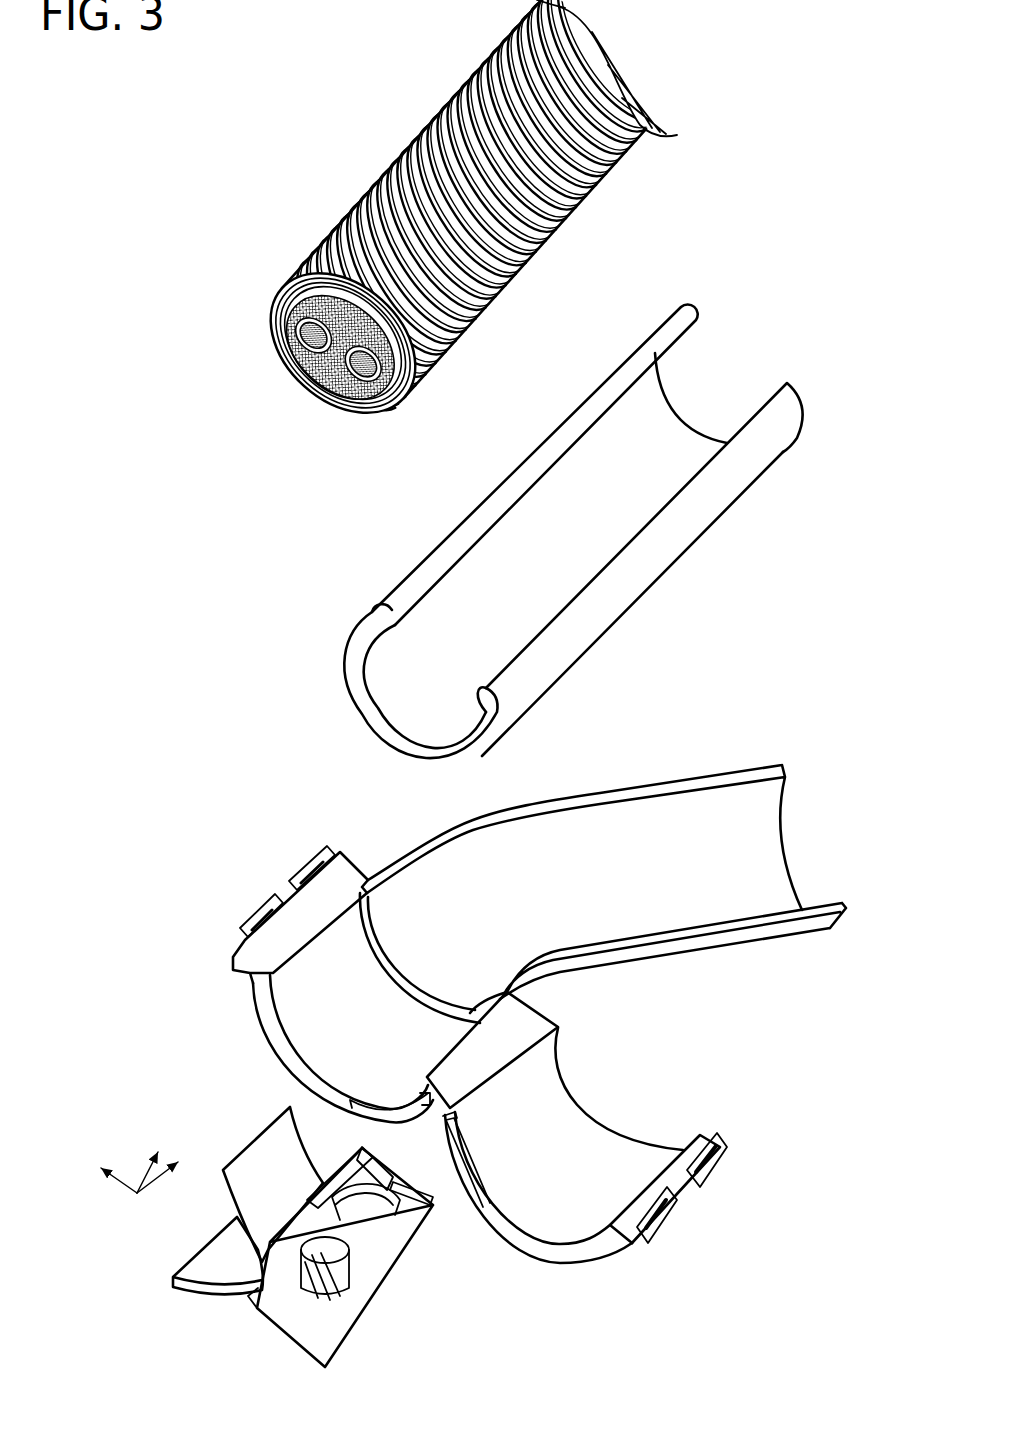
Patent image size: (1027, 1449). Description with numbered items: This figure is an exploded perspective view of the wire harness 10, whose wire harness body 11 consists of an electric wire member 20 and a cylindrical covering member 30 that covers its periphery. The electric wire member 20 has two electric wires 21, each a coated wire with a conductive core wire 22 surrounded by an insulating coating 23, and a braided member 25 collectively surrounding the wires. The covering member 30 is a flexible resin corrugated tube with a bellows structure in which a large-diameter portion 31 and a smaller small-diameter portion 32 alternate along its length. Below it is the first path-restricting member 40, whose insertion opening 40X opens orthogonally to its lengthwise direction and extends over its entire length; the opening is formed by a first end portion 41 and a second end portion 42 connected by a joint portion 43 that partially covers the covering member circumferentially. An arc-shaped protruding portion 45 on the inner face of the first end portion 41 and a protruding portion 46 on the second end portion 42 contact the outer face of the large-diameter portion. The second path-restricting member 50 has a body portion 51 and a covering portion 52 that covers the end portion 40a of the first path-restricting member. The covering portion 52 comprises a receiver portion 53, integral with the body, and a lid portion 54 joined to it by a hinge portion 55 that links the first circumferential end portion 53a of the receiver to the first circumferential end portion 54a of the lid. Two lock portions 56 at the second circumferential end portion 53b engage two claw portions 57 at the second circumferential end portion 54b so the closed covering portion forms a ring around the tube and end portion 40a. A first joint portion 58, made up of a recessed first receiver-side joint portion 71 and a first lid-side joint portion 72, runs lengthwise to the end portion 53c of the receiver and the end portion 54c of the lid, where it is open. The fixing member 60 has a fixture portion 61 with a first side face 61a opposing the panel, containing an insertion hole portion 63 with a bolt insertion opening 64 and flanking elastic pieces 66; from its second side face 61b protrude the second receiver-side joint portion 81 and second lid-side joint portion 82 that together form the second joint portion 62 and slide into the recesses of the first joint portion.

The wire harness 10 is at (142, 108).
The wire harness body 11 is at (390, 174).
The electric wire member 20 is at (311, 390).
The electric wire 21 is at (298, 390).
The core wire 22 is at (293, 341).
The insulating coating 23 is at (320, 345).
The braided member 25 is at (355, 392).
The covering member 30 is at (318, 303).
The large-diameter portion 31 is at (343, 319).
The small-diameter portion 32 is at (316, 280).
The first path-restricting member 40 is at (573, 531).
The end portion of first path-restricting member 40a is at (683, 407).
The insertion opening 40X is at (570, 592).
The first end portion 41 is at (405, 578).
The second end portion 42 is at (500, 666).
The joint portion 43 is at (527, 693).
The protruding portion 45 is at (387, 625).
The protruding portion 46 is at (483, 698).
The second path-restricting member 50 is at (513, 1024).
The body portion 51 is at (708, 773).
The covering portion 52 is at (477, 1069).
The receiver portion 53 is at (343, 966).
The first circumferential end portion of receiver portion 53a is at (466, 1022).
The second circumferential end portion of receiver portion 53b is at (350, 868).
The end portion of receiver portion 53c is at (262, 1004).
The lid portion 54 is at (610, 1167).
The first circumferential end portion of lid portion 54a is at (548, 1057).
The second circumferential end portion of lid portion 54b is at (703, 1137).
The end portion of lid portion 54c is at (522, 1250).
The hinge portion 55 is at (525, 1000).
The lock portion 56 is at (328, 872).
The claw portion 57 is at (723, 1157).
The first joint portion 58 is at (456, 1121).
The fixing member 60 is at (302, 1227).
The fixture portion 61 is at (311, 1241).
The first side face 61a is at (354, 1176).
The second side face 61b is at (255, 1304).
The second joint portion 62 is at (224, 1188).
The insertion hole portion 63 is at (320, 1280).
The bolt insertion opening 64 is at (426, 1212).
The elastic piece 66 is at (393, 1158).
The first receiver-side joint portion 71 is at (367, 1106).
The first lid-side joint portion 72 is at (460, 1157).
The second receiver-side joint portion 81 is at (222, 1240).
The second lid-side joint portion 82 is at (262, 1130).